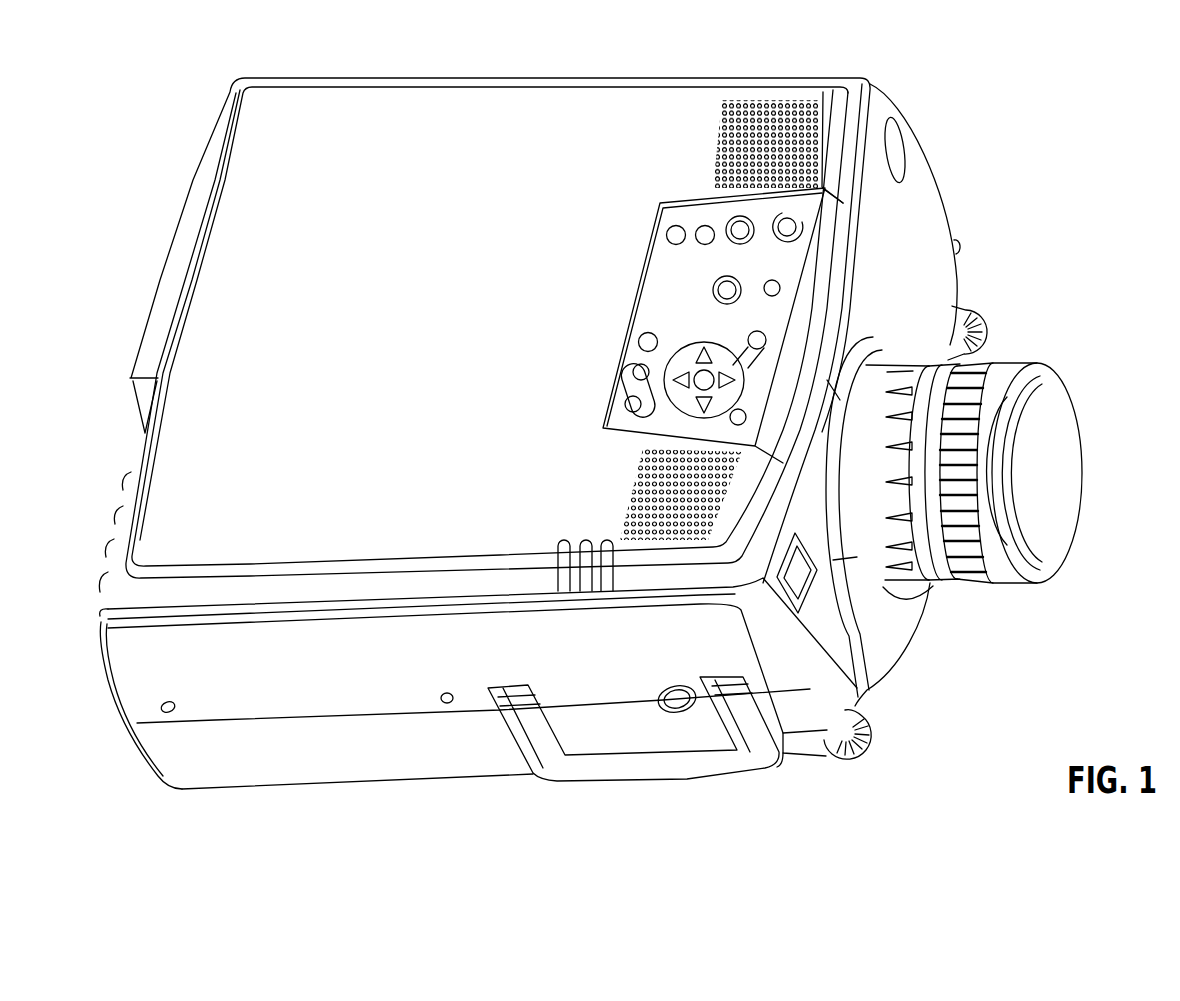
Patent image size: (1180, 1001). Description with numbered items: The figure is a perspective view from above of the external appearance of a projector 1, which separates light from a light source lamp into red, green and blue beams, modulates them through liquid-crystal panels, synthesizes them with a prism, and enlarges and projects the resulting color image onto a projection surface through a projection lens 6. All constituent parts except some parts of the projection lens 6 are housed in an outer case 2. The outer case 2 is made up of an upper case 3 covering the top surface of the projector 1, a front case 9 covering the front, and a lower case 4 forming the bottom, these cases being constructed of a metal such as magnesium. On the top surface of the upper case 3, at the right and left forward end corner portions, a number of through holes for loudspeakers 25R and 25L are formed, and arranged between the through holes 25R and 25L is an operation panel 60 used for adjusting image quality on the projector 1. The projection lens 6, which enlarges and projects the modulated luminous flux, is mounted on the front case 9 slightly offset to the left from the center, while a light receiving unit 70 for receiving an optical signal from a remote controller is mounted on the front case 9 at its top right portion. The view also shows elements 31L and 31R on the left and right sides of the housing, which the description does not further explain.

The projector 1 is at (200, 82).
The outer case 2 is at (141, 760).
The upper case 3 is at (137, 664).
The lower case 4 is at (215, 779).
The projection lens 6 is at (970, 363).
The front case 9 is at (932, 197).
The operation panel 60 is at (645, 290).
The light receiving unit 70 is at (893, 130).
The through holes for loudspeaker 25L is at (717, 152).
The through holes for loudspeaker 25R is at (632, 495).
The left adjustable foot 31L is at (960, 303).
The right adjustable foot 31R is at (865, 724).